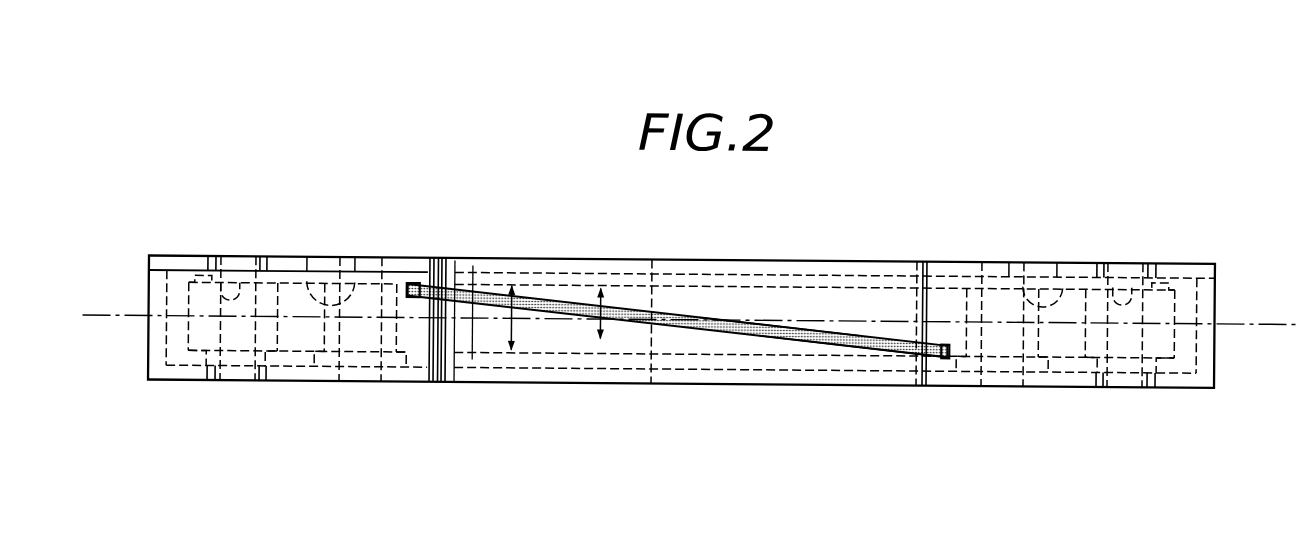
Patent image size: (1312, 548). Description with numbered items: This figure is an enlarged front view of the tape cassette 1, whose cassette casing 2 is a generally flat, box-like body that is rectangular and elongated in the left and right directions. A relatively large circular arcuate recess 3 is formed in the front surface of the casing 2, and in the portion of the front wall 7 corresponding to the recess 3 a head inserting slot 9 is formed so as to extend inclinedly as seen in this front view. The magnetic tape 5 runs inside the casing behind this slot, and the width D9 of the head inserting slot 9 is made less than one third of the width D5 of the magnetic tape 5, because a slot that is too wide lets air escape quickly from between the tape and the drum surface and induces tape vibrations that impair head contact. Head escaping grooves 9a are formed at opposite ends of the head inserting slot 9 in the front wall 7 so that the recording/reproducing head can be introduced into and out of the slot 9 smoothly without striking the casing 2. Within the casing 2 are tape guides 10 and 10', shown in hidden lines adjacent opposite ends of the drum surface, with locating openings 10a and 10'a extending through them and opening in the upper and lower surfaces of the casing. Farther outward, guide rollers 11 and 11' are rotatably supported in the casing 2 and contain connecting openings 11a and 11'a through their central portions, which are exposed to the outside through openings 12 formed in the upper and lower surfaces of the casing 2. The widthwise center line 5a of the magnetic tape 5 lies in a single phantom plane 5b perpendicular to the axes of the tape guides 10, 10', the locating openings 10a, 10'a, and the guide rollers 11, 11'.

The tape cassette 1 is at (1074, 137).
The cassette casing 2 is at (1203, 254).
The circular arcuate recess 3 is at (470, 370).
The magnetic tape 5 is at (561, 297).
The widthwise center line of the magnetic tape 5a is at (873, 330).
The phantom plane 5b is at (798, 321).
The front wall 7 is at (542, 370).
The head inserting slot 9 is at (647, 306).
The head escaping groove 9a is at (423, 253).
The tape guide 10 is at (1038, 289).
The locating opening 10a is at (997, 258).
The tape guide 10' is at (326, 282).
The locating opening 10'a is at (372, 290).
The guide roller 11 is at (1175, 325).
The connecting opening 11a is at (1123, 294).
The guide roller 11' is at (182, 317).
The connecting opening 11'a is at (229, 285).
The opening 12 is at (215, 253).
The width of the magnetic tape D5 is at (508, 325).
The width of the head inserting slot D9 is at (607, 311).